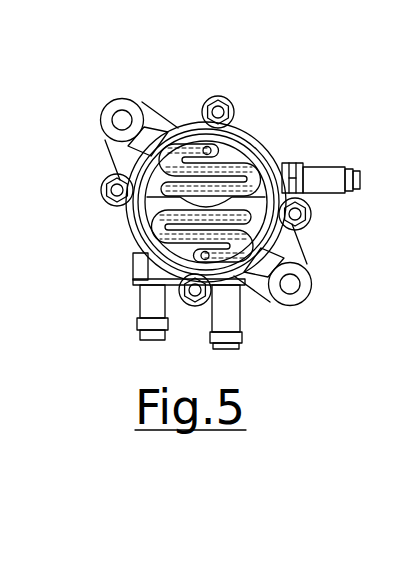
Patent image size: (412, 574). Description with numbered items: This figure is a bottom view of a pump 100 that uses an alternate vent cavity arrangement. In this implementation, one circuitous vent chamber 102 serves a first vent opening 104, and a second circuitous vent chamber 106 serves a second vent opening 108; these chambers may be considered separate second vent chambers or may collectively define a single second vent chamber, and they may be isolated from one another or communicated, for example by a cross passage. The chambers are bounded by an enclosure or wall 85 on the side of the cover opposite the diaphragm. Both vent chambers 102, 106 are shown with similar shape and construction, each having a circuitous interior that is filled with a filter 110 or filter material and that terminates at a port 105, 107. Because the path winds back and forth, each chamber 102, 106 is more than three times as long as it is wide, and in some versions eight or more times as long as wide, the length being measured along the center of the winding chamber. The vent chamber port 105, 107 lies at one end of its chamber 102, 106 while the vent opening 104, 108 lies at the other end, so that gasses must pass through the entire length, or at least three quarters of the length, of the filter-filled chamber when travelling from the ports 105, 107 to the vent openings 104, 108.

The pump 100 is at (292, 66).
The wall 85 is at (225, 148).
The circuitous vent chamber 102 is at (237, 160).
The first vent opening 104 is at (204, 146).
The port 105 is at (153, 187).
The second circuitous vent chamber 106 is at (280, 234).
The port 107 is at (243, 226).
The second vent opening 108 is at (194, 292).
The filter 110 is at (253, 176).